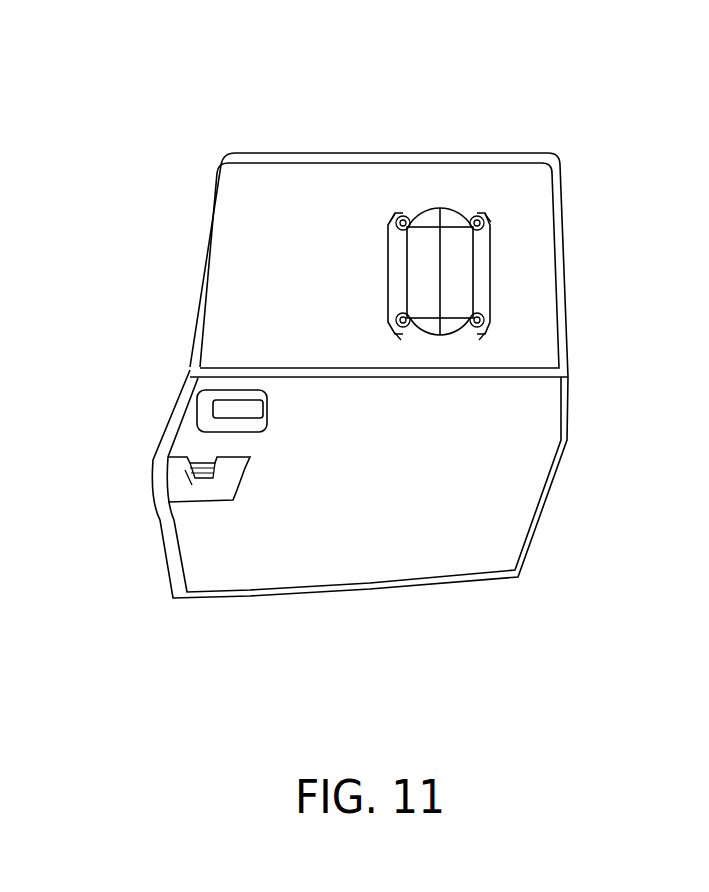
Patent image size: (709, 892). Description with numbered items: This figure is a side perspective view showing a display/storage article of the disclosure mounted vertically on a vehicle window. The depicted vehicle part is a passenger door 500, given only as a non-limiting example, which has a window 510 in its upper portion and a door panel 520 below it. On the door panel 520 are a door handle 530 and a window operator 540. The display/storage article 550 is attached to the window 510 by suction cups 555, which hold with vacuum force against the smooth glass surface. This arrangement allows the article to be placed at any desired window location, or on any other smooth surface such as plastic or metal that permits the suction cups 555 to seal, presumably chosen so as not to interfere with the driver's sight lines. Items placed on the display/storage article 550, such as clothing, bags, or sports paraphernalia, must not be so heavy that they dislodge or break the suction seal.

The passenger door 500 is at (448, 110).
The window 510 is at (538, 248).
The door panel 520 is at (337, 403).
The door handle 530 is at (243, 400).
The window operator 540 is at (170, 452).
The display/storage article 550 is at (450, 223).
The suction cups 555 is at (483, 313).